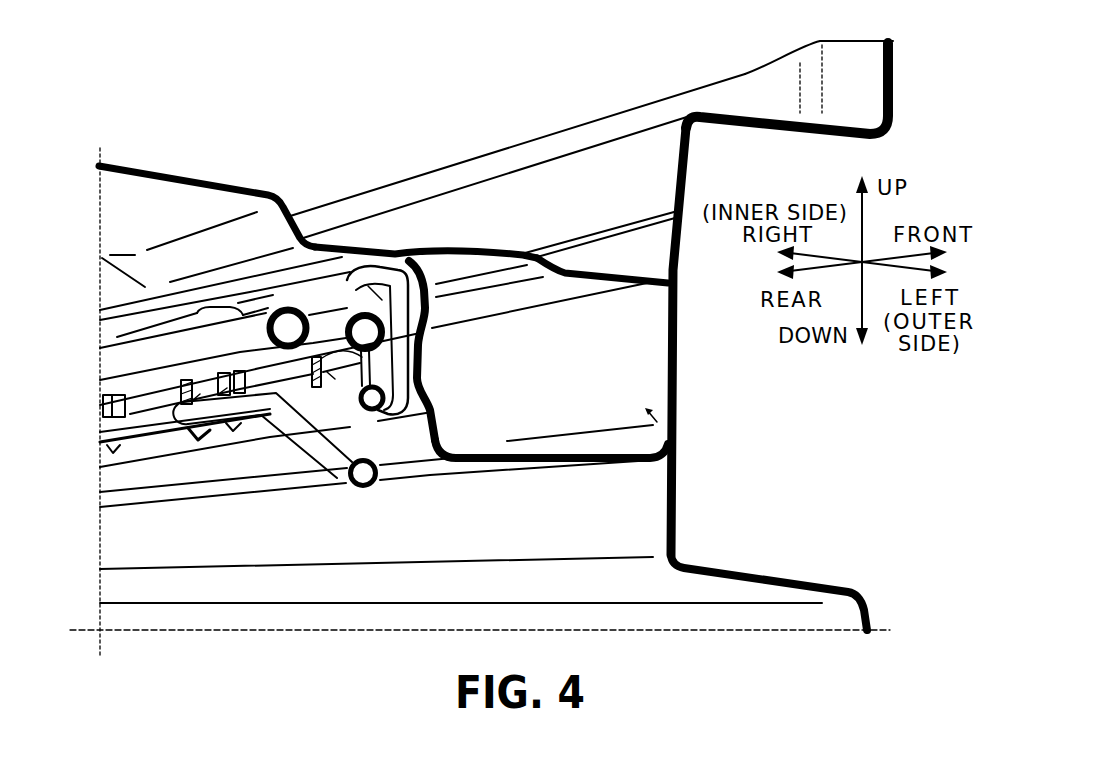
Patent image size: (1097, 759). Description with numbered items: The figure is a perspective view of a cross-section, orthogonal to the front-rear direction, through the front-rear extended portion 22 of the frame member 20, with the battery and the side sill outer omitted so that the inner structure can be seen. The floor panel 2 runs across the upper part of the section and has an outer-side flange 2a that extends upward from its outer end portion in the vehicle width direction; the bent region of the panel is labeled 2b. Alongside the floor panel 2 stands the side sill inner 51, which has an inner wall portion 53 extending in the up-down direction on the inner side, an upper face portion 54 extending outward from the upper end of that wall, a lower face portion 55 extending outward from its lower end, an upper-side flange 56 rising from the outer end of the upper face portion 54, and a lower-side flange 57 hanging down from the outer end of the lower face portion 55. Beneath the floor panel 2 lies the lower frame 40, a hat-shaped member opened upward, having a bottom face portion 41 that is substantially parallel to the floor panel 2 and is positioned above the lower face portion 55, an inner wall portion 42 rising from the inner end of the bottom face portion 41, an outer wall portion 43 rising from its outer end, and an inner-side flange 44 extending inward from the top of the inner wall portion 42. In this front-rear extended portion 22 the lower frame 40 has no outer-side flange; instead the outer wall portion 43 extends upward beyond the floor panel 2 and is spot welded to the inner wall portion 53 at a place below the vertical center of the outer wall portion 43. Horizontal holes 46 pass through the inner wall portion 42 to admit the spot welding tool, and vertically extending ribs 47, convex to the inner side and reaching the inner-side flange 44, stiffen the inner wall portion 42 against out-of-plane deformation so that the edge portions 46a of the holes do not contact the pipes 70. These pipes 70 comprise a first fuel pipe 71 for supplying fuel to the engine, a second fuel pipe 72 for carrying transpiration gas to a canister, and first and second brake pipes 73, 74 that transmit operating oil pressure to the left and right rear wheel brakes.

The floor panel 2 is at (127, 166).
The outer-side flange 2a is at (620, 250).
The floor panel bent portion 2b is at (467, 248).
The frame member 20 is at (780, 341).
The front-rear extended portion 22 is at (676, 438).
The lower frame 40 is at (577, 470).
The bottom face portion 41 is at (522, 468).
The inner wall portion 42 is at (265, 428).
The outer wall portion 43 is at (640, 350).
The inner-side flange 44 is at (337, 330).
The horizontal hole 46 is at (185, 438).
The edge portion 46a is at (421, 386).
The rib 47 is at (108, 420).
The side sill inner 51 is at (527, 127).
The inner wall portion 53 is at (505, 206).
The upper face portion 54 is at (770, 110).
The lower face portion 55 is at (707, 593).
The upper-side flange 56 is at (637, 122).
The lower-side flange 57 is at (548, 622).
The pipes 70 is at (300, 351).
The first fuel pipe 71 is at (348, 280).
The second fuel pipe 72 is at (207, 335).
The first brake pipe 73 is at (380, 460).
The second brake pipe 74 is at (365, 492).